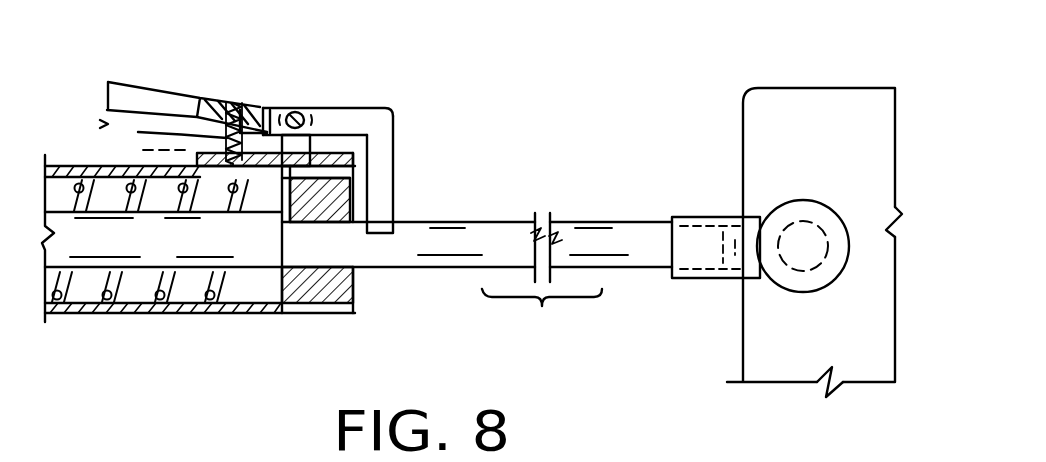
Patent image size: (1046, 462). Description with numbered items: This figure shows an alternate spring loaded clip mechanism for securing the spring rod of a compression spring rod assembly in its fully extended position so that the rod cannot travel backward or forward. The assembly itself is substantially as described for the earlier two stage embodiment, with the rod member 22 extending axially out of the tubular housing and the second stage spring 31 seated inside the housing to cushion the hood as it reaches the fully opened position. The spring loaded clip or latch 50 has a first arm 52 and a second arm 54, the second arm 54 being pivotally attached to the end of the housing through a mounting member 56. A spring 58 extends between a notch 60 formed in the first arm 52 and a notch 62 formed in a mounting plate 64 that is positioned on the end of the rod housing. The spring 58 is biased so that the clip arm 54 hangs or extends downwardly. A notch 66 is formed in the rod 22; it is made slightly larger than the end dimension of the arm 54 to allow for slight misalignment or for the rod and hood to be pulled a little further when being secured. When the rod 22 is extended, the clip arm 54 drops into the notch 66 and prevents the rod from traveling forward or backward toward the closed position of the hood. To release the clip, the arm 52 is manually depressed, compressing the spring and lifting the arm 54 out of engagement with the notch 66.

The rod member 22 is at (472, 240).
The spring 31 is at (88, 315).
The spring loaded clip 50 is at (325, 117).
The first arm 52 is at (157, 96).
The second arm 54 is at (388, 150).
The mounting member 56 is at (297, 145).
The spring 58 is at (148, 133).
The notch 60 is at (233, 168).
The notch 62 is at (228, 152).
The mounting plate 64 is at (280, 166).
The notch 66 is at (362, 268).